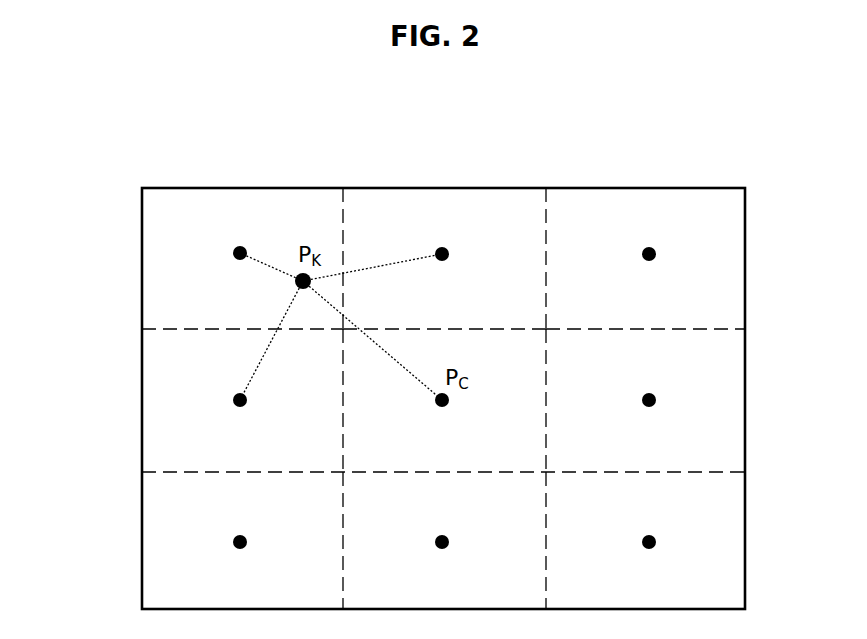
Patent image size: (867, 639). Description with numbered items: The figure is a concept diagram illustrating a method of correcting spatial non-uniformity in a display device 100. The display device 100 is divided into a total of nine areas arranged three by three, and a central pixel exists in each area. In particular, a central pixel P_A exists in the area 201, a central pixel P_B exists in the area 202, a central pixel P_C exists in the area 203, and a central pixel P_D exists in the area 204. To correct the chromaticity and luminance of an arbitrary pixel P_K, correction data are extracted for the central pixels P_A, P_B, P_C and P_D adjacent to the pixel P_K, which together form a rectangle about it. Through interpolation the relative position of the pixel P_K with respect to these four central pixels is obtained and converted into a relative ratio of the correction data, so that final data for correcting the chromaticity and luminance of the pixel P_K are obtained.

The display device 100 is at (762, 164).
The area 201 is at (181, 205).
The area 202 is at (377, 204).
The area 203 is at (510, 345).
The area 204 is at (154, 398).